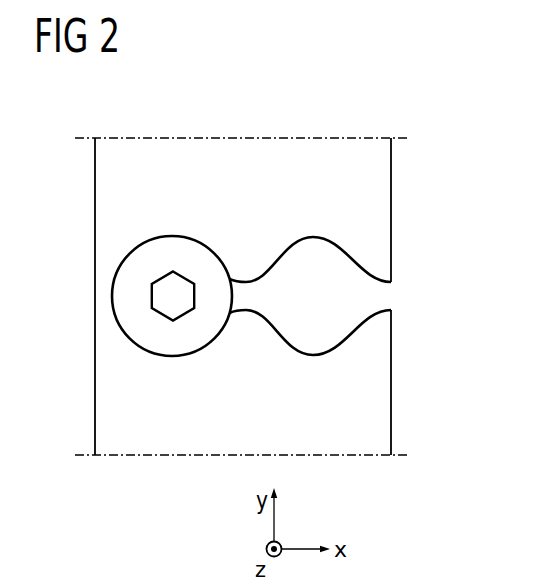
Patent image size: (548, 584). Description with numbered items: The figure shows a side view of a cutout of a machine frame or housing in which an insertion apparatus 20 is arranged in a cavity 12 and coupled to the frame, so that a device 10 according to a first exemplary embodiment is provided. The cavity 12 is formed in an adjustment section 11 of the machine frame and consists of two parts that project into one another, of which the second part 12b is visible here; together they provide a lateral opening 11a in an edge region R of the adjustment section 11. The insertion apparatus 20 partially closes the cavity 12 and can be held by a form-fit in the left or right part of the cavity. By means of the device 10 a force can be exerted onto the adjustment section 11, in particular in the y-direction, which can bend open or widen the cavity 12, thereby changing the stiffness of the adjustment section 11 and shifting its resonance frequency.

The device 10 is at (340, 102).
The adjustment section 11 is at (275, 296).
The lateral opening 11a is at (398, 295).
The cavity 12 is at (320, 251).
The second part 12b is at (317, 336).
The insertion apparatus 20 is at (147, 341).
The edge region R is at (370, 376).